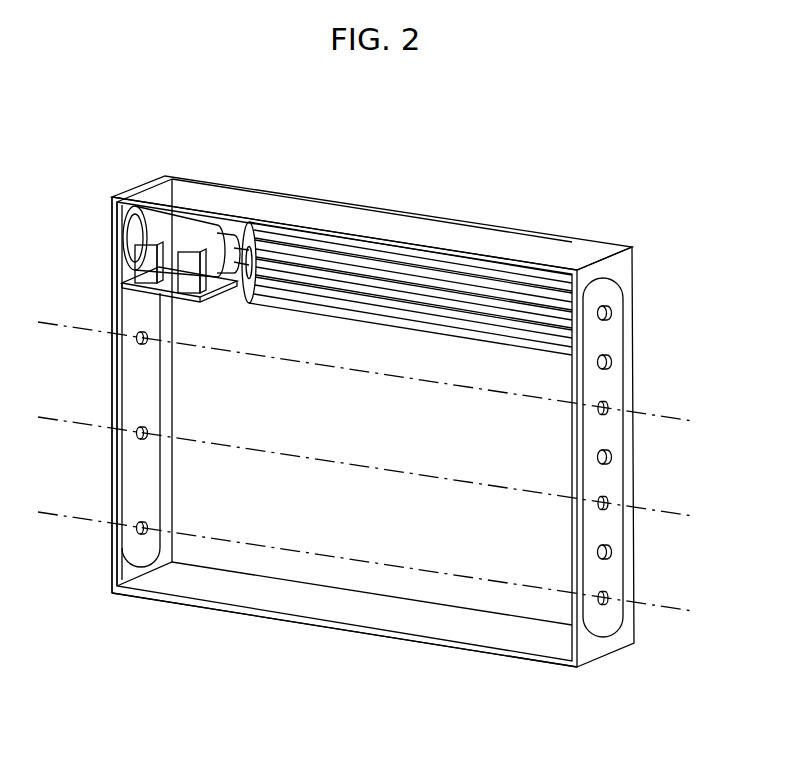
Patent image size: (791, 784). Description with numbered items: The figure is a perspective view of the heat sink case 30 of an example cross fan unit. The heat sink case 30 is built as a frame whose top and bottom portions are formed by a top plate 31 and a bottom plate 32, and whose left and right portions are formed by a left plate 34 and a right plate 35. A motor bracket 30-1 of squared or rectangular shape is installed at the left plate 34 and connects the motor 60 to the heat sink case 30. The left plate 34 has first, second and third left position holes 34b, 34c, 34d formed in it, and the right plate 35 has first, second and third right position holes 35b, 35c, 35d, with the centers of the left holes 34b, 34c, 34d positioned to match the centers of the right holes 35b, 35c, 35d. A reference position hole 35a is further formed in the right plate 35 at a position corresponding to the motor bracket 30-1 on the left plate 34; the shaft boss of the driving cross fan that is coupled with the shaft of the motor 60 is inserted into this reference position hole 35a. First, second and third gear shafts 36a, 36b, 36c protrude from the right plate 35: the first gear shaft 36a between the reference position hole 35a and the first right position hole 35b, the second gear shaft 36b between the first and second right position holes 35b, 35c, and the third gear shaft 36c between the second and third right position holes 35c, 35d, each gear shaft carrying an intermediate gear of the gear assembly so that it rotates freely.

The heat sink case 30 is at (607, 173).
The motor bracket 30-1 is at (143, 268).
The top plate 31 is at (438, 228).
The bottom plate 32 is at (378, 617).
The left plate 34 is at (112, 398).
The first left position hole 34b is at (143, 343).
The second left position hole 34c is at (143, 438).
The third left position hole 34d is at (143, 533).
The right plate 35 is at (618, 274).
The reference position hole 35a is at (609, 313).
The first right position hole 35b is at (607, 407).
The second right position hole 35c is at (607, 502).
The third right position hole 35d is at (607, 597).
The first gear shaft 36a is at (609, 362).
The second gear shaft 36b is at (609, 457).
The third gear shaft 36c is at (609, 552).
The motor 60 is at (147, 231).